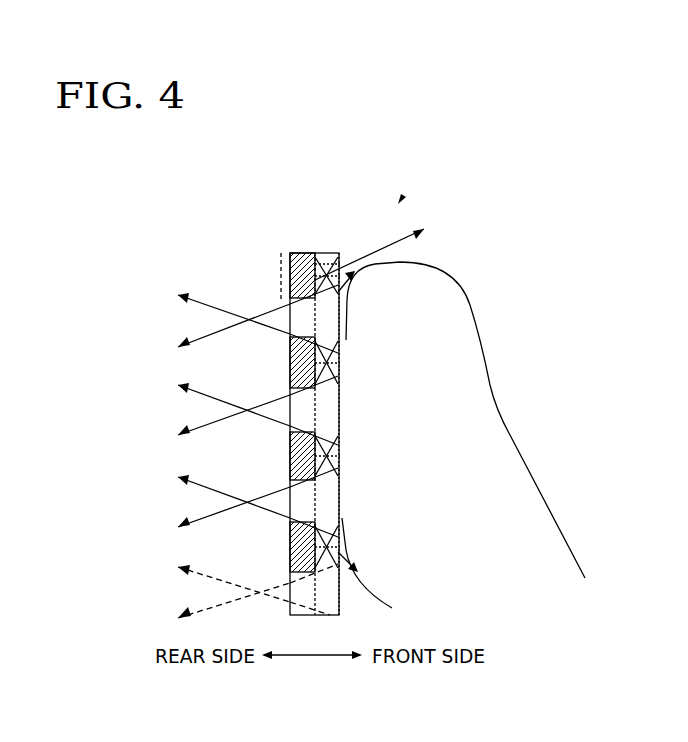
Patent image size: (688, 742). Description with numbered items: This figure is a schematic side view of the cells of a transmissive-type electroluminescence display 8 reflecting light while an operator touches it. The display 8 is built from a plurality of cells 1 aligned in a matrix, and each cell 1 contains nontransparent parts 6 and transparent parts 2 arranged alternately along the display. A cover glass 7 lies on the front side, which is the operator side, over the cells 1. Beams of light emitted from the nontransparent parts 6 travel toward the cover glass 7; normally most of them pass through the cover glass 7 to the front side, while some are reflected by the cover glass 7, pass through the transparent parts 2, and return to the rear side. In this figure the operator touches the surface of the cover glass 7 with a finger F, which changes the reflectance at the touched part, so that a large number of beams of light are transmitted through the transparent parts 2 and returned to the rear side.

The cell 1 is at (280, 283).
The transparent part 2 is at (292, 320).
The nontransparent part 6 is at (291, 253).
The cover glass 7 is at (322, 252).
The transmissive-type electroluminescence display 8 is at (399, 203).
The finger F is at (494, 376).